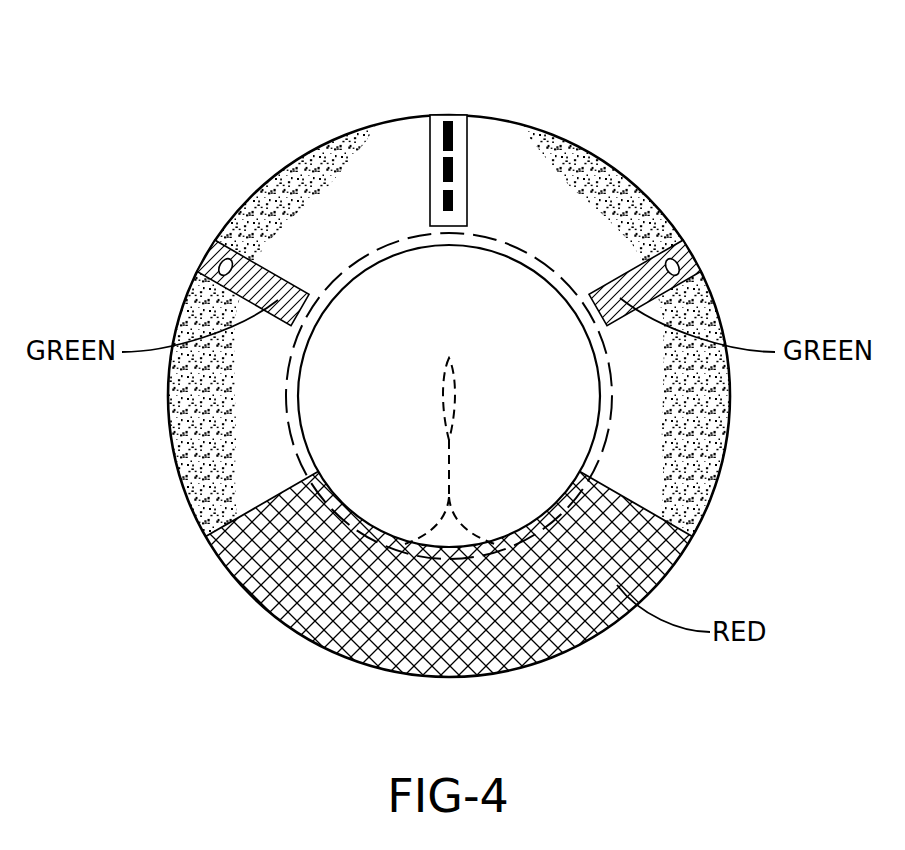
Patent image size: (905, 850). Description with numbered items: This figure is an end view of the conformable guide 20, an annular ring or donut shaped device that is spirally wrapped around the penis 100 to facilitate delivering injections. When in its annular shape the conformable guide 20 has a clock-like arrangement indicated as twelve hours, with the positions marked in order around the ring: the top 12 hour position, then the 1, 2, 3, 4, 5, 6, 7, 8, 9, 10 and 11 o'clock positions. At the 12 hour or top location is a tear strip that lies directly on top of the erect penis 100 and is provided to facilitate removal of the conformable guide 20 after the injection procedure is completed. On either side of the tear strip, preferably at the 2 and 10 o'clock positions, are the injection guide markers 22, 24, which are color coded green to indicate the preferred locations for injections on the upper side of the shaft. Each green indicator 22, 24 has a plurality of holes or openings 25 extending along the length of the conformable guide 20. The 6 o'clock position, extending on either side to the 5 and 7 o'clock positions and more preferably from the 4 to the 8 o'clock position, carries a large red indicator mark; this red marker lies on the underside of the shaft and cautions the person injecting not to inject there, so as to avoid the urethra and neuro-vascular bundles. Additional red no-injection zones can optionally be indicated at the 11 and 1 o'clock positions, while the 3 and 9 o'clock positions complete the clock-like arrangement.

The 1 o'clock position 1 is at (597, 129).
The 2 o'clock position 2 is at (715, 243).
The 3 o'clock position 3 is at (747, 395).
The 4 o'clock position 4 is at (707, 548).
The 5 o'clock position 5 is at (601, 660).
The 6 o'clock position 6 is at (446, 703).
The 7 o'clock position 7 is at (295, 668).
The 8 o'clock position 8 is at (182, 548).
The 9 o'clock position 9 is at (147, 395).
The 10 o'clock position 10 is at (175, 243).
The 11 o'clock position 11 is at (293, 128).
The 12 hour position 12 is at (448, 151).
The conformable guide 20 is at (356, 128).
The injection guide marker 22 is at (277, 273).
The injection guide marker 24 is at (623, 271).
The holes or openings 25 is at (221, 270).
The penis 100 is at (366, 394).